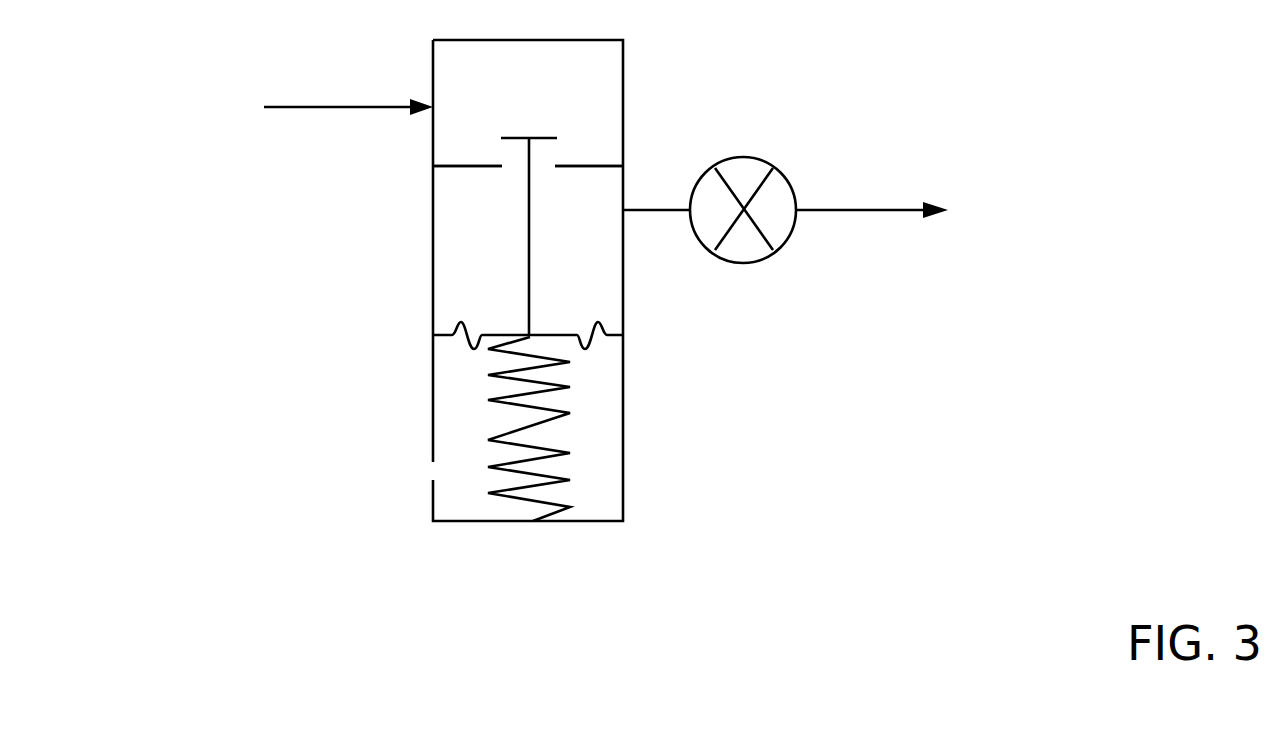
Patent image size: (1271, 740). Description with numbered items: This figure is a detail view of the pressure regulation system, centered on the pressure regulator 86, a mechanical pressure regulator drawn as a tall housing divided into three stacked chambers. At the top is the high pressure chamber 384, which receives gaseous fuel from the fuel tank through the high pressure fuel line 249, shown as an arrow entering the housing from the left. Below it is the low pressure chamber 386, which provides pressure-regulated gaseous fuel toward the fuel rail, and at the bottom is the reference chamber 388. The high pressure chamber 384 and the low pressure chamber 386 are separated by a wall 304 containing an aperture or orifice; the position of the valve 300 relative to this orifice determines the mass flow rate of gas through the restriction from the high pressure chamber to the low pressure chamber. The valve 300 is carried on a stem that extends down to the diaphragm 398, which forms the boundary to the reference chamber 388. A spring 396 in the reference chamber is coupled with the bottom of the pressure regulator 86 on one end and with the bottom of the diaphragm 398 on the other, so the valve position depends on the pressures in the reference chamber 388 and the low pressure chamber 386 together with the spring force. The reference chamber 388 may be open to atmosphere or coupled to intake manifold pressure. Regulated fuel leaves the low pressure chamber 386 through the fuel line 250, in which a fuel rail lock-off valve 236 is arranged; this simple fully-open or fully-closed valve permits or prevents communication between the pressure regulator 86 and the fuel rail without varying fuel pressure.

The pressure regulator 86 is at (716, 341).
The high pressure fuel line 249 is at (325, 106).
The fuel line 250 is at (845, 210).
The fuel rail lock-off valve 236 is at (760, 160).
The valve 300 is at (540, 138).
The wall 304 is at (483, 167).
The high pressure chamber 384 is at (547, 93).
The low pressure chamber 386 is at (505, 264).
The reference chamber 388 is at (479, 430).
The spring 396 is at (530, 503).
The diaphragm 398 is at (545, 333).